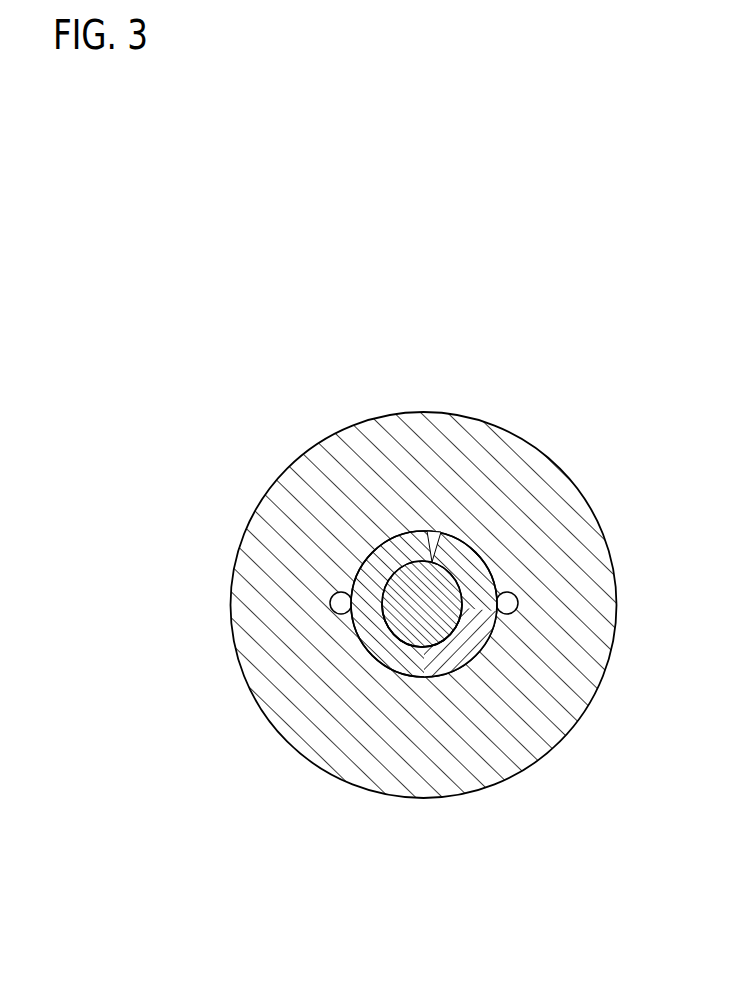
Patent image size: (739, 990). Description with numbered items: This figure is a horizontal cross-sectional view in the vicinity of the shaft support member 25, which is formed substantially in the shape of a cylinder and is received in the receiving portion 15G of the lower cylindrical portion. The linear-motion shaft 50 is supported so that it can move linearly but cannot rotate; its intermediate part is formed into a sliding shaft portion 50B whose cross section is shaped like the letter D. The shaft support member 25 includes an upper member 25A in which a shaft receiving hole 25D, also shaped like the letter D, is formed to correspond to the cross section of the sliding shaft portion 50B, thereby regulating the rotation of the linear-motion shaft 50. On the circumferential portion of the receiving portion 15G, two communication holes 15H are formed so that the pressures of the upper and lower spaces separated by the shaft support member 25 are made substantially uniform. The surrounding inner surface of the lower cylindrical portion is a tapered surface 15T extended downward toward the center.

The tapered surface 15T is at (546, 707).
The receiving portion 15G is at (487, 558).
The communication holes 15H is at (515, 596).
The shaft support member 25 is at (375, 541).
The upper member 25A is at (402, 565).
The shaft receiving hole 25D is at (483, 557).
The linear-motion shaft 50 is at (430, 548).
The sliding shaft portion 50B is at (422, 623).